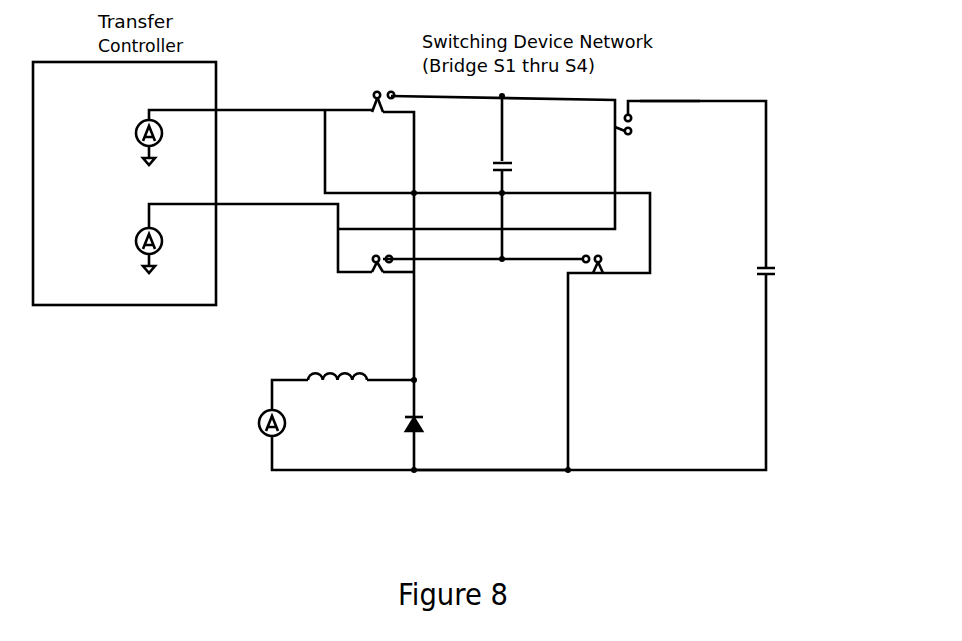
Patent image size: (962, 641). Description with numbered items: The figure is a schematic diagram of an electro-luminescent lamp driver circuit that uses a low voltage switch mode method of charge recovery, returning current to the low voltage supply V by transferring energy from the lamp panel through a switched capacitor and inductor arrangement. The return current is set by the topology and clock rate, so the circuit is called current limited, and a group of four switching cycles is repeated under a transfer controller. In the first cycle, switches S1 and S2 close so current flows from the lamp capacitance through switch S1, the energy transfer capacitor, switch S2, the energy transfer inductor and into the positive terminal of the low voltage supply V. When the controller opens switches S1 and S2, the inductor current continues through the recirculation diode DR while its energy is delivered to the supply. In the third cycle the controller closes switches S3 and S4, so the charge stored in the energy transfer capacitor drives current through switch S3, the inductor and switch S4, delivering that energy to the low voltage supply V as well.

The switch S1 is at (690, 184).
The switch S2 is at (381, 282).
The switch S3 is at (382, 118).
The switch S4 is at (599, 282).
The recirculation diode DR is at (436, 425).
The low voltage supply V is at (207, 412).